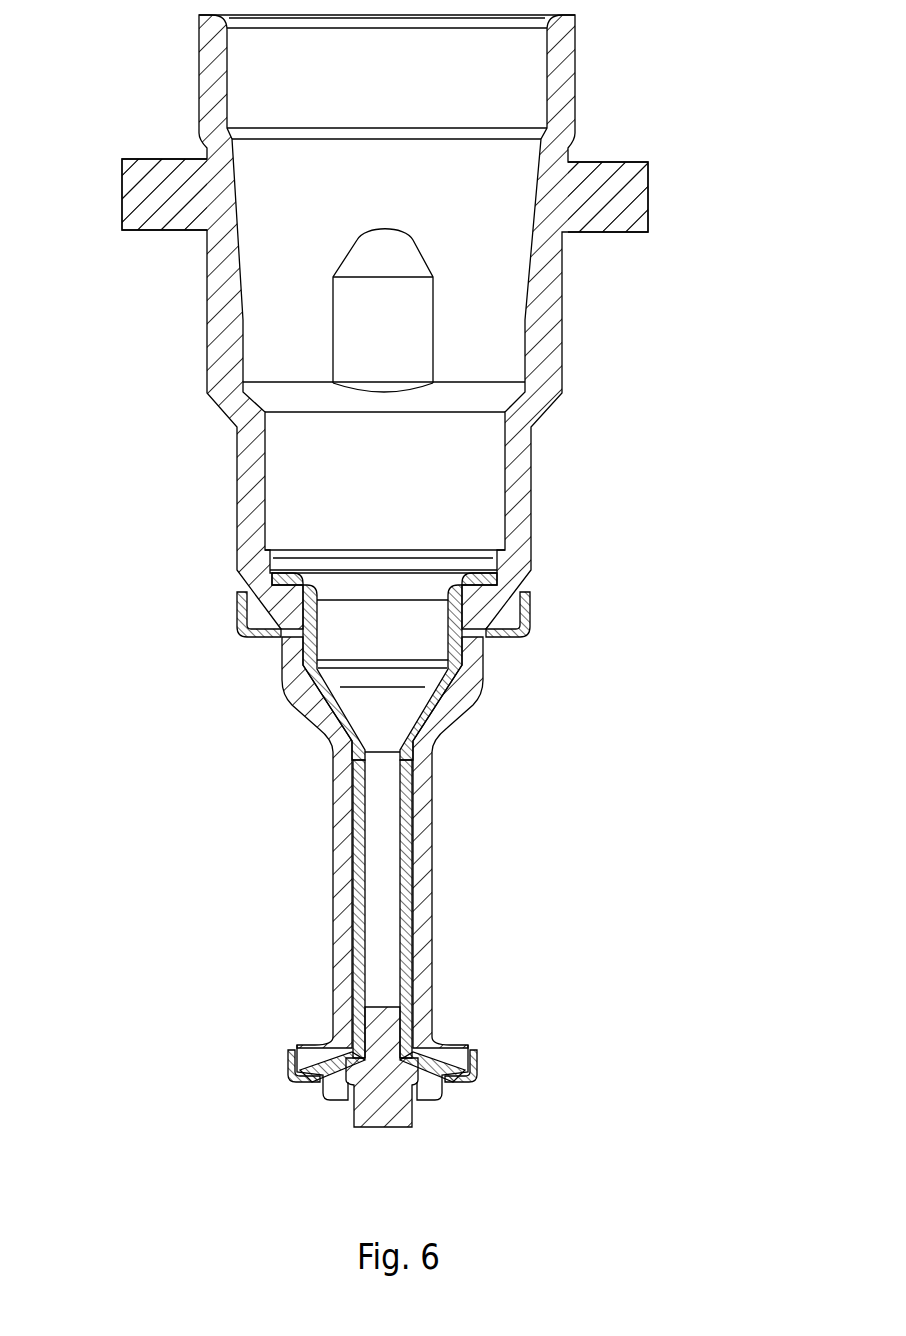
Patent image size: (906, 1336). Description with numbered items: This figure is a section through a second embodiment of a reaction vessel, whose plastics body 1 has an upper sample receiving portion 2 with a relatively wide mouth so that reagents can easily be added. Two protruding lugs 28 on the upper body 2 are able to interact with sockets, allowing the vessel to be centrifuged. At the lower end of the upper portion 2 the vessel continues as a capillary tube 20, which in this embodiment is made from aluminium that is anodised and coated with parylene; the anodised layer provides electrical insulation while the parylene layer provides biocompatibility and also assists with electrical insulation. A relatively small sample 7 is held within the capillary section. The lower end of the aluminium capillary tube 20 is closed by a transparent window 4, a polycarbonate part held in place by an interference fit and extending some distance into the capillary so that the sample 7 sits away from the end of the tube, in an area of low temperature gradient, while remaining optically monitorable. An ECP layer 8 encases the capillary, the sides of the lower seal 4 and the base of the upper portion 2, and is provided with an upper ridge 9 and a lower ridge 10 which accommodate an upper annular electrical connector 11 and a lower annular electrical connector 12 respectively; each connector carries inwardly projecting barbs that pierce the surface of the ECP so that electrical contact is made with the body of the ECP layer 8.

The plastics body 1 is at (689, 457).
The upper sample receiving portion 2 is at (517, 507).
The transparent window 4 is at (377, 1103).
The sample 7 is at (380, 880).
The ECP layer 8 is at (347, 935).
The upper ridge 9 is at (497, 598).
The lower ridge 10 is at (440, 1057).
The upper annular electrical connector 11 is at (236, 636).
The lower annular electrical connector 12 is at (288, 1080).
The aluminium capillary tube 20 is at (403, 823).
The protruding lugs 28 is at (145, 207).